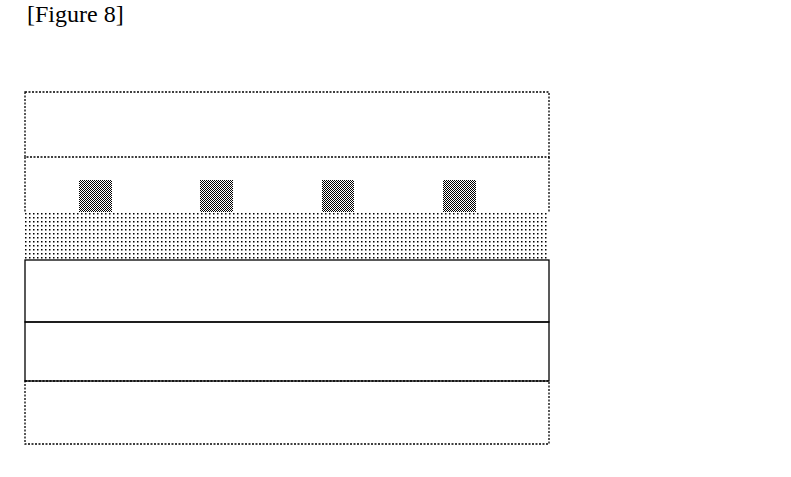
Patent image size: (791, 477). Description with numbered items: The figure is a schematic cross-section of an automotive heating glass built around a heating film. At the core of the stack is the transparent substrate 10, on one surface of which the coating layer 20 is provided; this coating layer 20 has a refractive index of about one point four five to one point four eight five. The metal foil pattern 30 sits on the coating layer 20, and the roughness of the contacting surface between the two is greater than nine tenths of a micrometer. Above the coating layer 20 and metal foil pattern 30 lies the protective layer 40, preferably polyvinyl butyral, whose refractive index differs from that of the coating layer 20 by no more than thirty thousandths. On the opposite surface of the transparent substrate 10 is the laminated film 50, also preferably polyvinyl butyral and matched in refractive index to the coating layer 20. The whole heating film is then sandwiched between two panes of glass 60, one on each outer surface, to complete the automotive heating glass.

The transparent substrate 10 is at (549, 292).
The coating layer 20 is at (549, 236).
The metal foil pattern 30 is at (107, 160).
The protective layer 40 is at (407, 170).
The laminated film 50 is at (549, 352).
The glass 60 is at (549, 118).